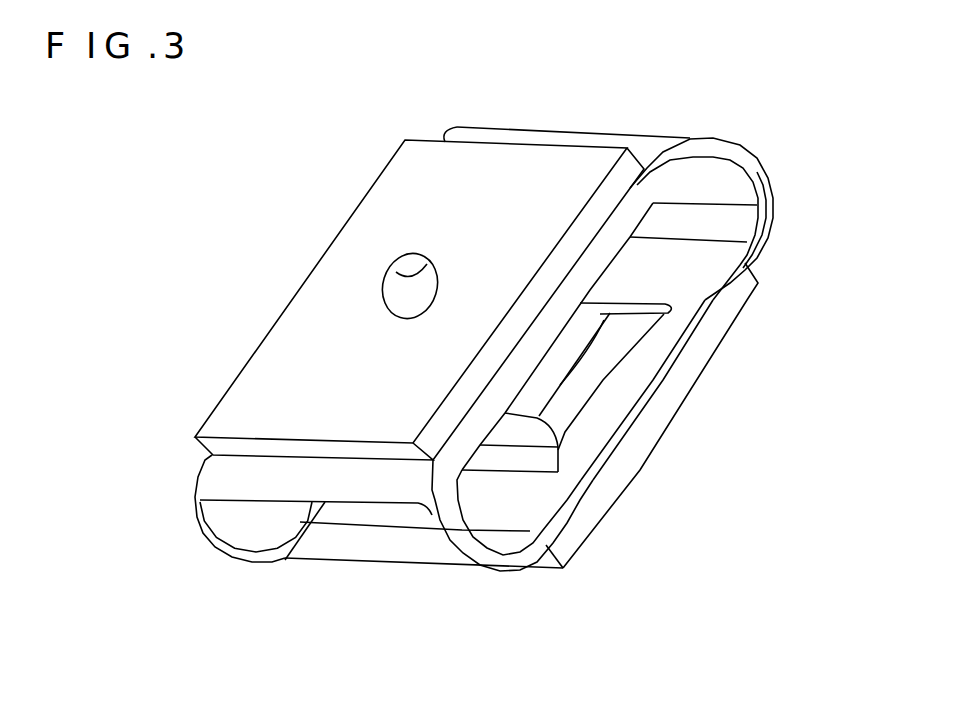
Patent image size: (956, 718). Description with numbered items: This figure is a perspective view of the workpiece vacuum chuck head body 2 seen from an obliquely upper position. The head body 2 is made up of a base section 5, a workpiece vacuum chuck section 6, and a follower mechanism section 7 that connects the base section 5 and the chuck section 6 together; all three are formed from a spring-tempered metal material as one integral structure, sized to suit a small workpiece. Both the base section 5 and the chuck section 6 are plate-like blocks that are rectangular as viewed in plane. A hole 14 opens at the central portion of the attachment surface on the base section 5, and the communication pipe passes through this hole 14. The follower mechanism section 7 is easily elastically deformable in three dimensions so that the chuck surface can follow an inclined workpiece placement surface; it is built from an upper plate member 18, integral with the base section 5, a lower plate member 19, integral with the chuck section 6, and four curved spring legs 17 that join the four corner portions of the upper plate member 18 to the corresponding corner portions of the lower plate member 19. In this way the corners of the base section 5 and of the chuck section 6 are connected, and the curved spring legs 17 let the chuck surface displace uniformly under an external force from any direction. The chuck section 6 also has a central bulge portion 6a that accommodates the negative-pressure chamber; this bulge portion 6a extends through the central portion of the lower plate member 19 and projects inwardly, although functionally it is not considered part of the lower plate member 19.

The workpiece vacuum chuck head body 2 is at (300, 203).
The base section 5 is at (293, 363).
The hole 14 is at (425, 262).
The workpiece vacuum chuck section 6 is at (693, 402).
The bulge portion 6a is at (587, 388).
The follower mechanism section 7 is at (222, 553).
The curved spring legs 17 is at (762, 172).
The upper plate member 18 is at (607, 252).
The lower plate member 19 is at (717, 300).